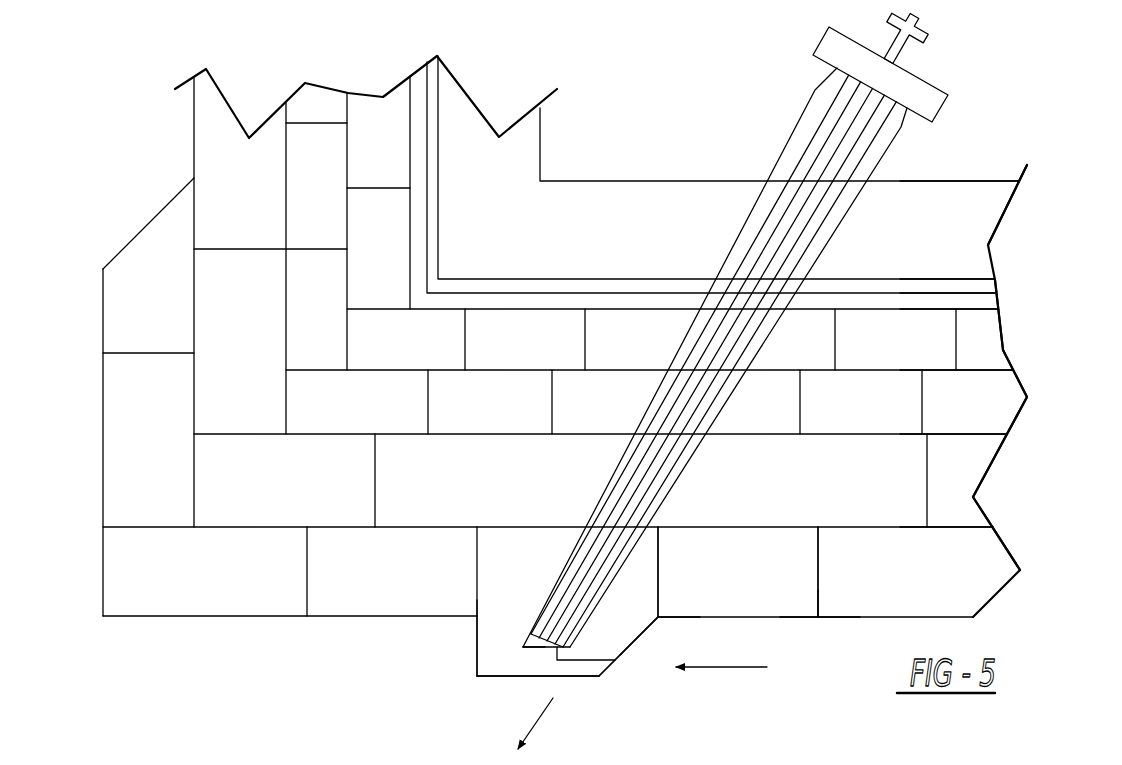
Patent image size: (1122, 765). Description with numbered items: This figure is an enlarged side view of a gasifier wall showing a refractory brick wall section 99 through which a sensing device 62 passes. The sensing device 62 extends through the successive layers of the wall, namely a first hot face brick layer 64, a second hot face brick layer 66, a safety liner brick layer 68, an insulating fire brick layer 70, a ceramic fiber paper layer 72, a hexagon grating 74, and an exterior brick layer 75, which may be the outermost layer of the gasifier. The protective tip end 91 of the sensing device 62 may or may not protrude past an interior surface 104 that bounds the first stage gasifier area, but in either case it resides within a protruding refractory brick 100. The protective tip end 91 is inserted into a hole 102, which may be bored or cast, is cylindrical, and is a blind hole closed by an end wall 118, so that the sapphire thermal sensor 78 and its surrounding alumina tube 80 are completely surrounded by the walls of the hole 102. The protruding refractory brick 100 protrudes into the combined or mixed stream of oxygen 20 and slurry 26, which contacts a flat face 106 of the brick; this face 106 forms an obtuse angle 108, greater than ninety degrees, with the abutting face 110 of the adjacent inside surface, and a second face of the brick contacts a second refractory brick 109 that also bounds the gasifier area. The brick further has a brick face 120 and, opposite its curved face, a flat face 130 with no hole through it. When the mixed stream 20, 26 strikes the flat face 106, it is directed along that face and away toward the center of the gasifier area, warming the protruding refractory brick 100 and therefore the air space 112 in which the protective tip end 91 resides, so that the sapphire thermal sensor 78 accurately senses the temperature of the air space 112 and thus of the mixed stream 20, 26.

The oxygen 20 is at (745, 667).
The slurry 26 is at (536, 724).
The sensing device 62 is at (669, 375).
The first hot face brick layer 64 is at (968, 553).
The second hot face brick layer 66 is at (963, 472).
The safety liner brick layer 68 is at (983, 402).
The insulating fire brick layer 70 is at (983, 337).
The ceramic fiber paper layer 72 is at (990, 300).
The hexagon grating 74 is at (987, 287).
The exterior brick layer 75 is at (968, 213).
The sapphire thermal sensor 78 is at (550, 602).
The alumina tube 80 is at (553, 578).
The protective tip end 91 is at (560, 660).
The refractory brick wall section 99 is at (647, 151).
The protruding refractory brick 100 is at (535, 573).
The hole 102 is at (533, 646).
The interior surface 104 is at (385, 617).
The face 106 is at (630, 644).
The obtuse angle 108 is at (677, 623).
The second refractory brick 109 is at (806, 574).
The face 110 is at (813, 618).
The air space 112 is at (527, 637).
The end wall 118 is at (662, 545).
The brick face 120 is at (477, 676).
The flat face 130 is at (500, 677).